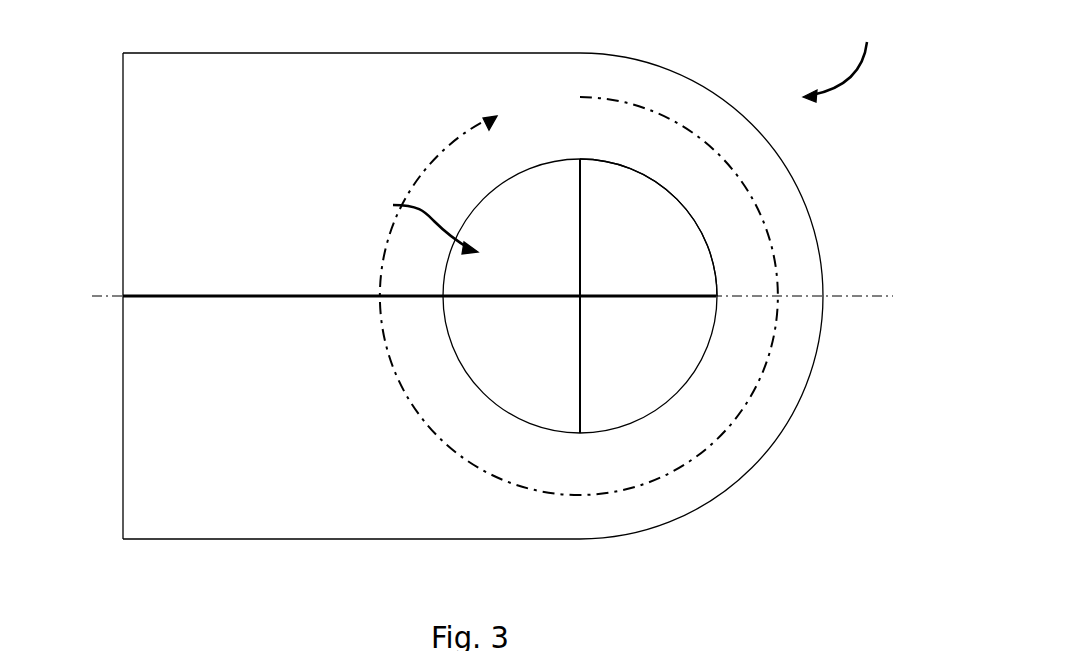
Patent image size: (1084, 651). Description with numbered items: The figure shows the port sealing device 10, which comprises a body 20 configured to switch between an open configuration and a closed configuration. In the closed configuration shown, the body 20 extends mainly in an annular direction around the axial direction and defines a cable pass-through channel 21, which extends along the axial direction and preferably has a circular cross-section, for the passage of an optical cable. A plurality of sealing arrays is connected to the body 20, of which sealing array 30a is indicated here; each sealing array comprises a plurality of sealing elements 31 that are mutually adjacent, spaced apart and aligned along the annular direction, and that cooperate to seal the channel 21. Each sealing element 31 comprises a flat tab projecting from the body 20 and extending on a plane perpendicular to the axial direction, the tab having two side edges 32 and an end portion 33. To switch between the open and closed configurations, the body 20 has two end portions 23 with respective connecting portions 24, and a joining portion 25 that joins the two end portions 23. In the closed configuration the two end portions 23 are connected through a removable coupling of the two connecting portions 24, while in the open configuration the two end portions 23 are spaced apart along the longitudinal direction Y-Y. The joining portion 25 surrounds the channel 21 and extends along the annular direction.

The port sealing device 10 is at (842, 52).
The body 20 is at (268, 501).
The cable pass-through channel 21 is at (662, 407).
The end portions 23 is at (140, 173).
The connecting portions 24 is at (146, 294).
The joining portion 25 is at (812, 373).
The sealing array 30a is at (406, 223).
The sealing elements 31 is at (655, 272).
The side edges 32 is at (578, 373).
The end portion 33 is at (593, 285).
The longitudinal direction Y-Y is at (843, 296).